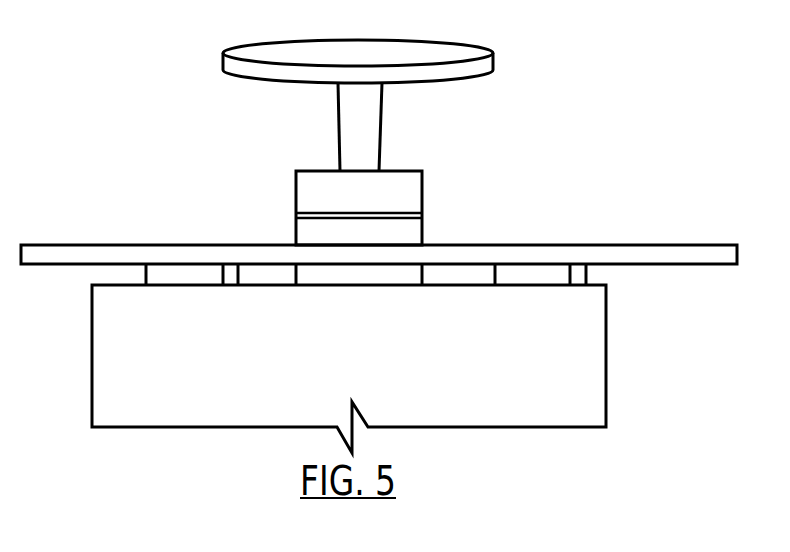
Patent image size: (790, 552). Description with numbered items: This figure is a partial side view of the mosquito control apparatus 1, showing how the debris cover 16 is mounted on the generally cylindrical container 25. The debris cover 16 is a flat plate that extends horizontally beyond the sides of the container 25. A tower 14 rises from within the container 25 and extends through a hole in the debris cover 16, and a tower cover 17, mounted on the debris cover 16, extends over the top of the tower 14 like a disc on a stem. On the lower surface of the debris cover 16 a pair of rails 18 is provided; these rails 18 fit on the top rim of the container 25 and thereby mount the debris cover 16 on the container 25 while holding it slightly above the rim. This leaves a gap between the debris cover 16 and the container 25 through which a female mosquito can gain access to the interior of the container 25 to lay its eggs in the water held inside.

The mosquito control apparatus 1 is at (128, 152).
The tower 14 is at (393, 214).
The debris cover 16 is at (605, 250).
The tower cover 17 is at (300, 57).
The rails 18 is at (186, 275).
The container 25 is at (120, 362).